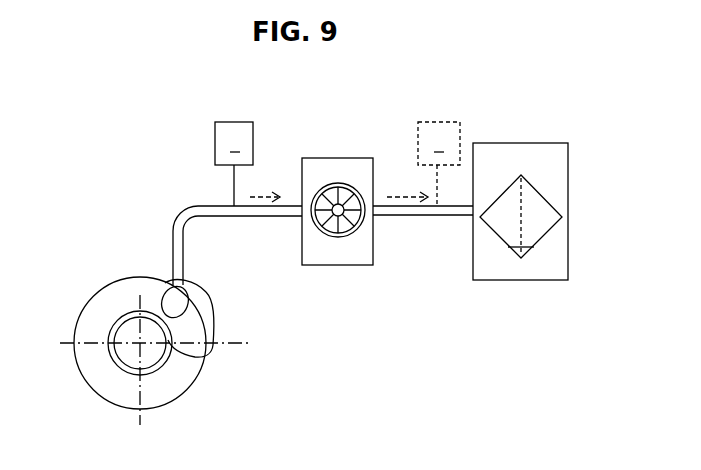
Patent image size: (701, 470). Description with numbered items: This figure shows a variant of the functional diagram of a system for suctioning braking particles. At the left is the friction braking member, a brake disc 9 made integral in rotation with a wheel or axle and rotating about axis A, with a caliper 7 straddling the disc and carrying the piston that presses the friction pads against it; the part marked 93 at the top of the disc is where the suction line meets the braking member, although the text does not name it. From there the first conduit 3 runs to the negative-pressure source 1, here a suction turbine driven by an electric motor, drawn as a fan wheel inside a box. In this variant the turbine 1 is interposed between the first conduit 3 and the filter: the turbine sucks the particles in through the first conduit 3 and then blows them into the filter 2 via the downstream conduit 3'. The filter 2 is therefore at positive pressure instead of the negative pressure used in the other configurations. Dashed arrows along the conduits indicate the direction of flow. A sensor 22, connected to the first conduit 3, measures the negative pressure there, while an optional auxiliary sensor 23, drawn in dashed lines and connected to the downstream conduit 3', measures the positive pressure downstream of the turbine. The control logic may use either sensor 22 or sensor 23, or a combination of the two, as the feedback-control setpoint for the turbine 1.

The brake disc 9 is at (107, 276).
The caliper 7 is at (214, 324).
The valve 93 is at (199, 290).
The first conduit 3 is at (221, 235).
The sensor 22 is at (213, 140).
The negative-pressure source 1 is at (338, 152).
The downstream conduit 3' is at (423, 239).
The auxiliary sensor 23 is at (461, 129).
The filter 2 is at (537, 140).